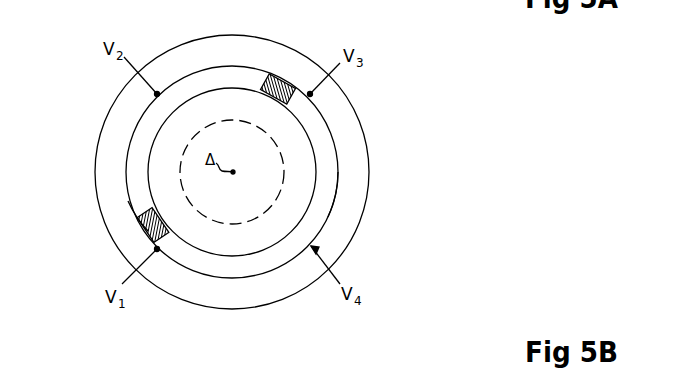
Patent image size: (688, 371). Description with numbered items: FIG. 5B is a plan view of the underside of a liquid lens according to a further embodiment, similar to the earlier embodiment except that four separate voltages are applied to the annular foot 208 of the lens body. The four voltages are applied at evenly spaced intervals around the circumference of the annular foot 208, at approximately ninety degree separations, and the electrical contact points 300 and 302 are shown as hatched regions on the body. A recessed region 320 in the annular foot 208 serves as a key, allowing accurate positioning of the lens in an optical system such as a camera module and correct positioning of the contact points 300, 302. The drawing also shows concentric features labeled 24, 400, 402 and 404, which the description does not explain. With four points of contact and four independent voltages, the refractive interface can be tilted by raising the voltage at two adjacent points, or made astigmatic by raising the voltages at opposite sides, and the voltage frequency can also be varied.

The outer ring 24 is at (238, 34).
The rotor disk 400 is at (157, 95).
The inner ring 402 is at (312, 243).
The central bore 404 is at (194, 127).
The annular foot 208 is at (342, 175).
The electrical contact point 302 is at (306, 93).
The electrical contact point 300 is at (157, 252).
The recessed region 320 is at (150, 237).